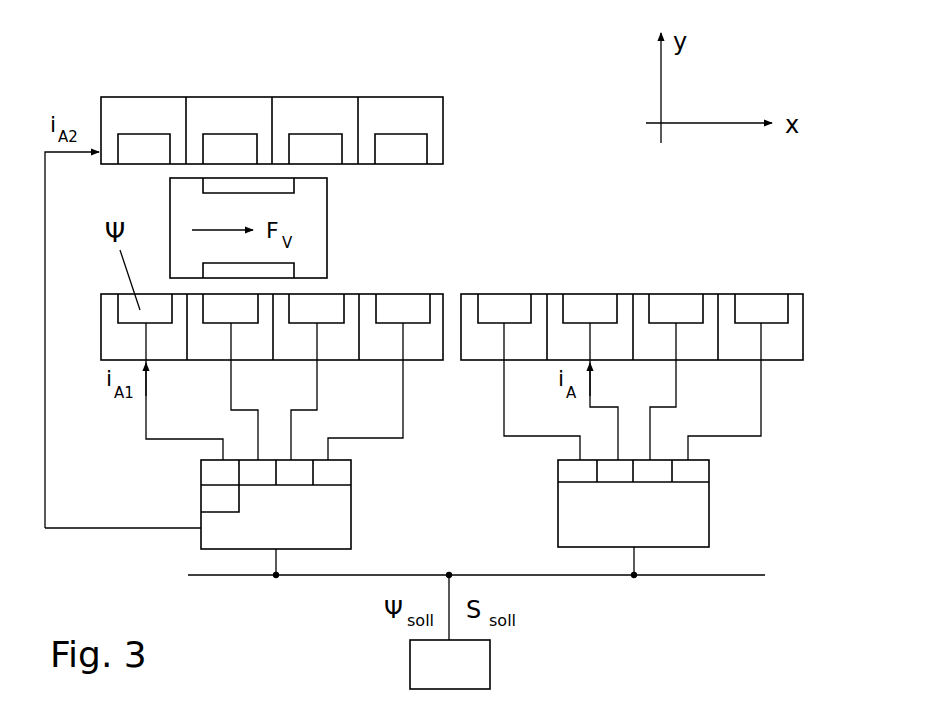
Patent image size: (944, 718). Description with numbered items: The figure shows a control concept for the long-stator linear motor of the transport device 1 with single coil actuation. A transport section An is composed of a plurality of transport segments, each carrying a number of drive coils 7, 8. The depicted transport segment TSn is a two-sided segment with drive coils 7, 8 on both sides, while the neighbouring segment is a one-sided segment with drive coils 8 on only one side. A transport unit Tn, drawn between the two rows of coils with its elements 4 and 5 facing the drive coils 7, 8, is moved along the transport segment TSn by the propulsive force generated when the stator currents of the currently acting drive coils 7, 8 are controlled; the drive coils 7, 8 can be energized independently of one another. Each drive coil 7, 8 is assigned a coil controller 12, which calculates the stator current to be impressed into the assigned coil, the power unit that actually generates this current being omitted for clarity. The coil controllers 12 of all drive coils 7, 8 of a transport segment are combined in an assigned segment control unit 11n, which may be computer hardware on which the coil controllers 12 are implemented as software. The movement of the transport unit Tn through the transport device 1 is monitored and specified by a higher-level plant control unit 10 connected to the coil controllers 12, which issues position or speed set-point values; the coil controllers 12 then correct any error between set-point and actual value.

The transport device 1 is at (507, 130).
The magnet of carriage 4 is at (227, 188).
The secondary element of carriage 5 is at (277, 272).
The drive coil 7 is at (310, 148).
The drive coil 8 is at (407, 308).
The plant control unit 10 is at (430, 680).
The segment control unit 11n is at (307, 538).
The coil controller 12 is at (222, 503).
The transport unit Tn is at (182, 178).
The transport segment TSn is at (338, 200).
The transport section An is at (573, 253).